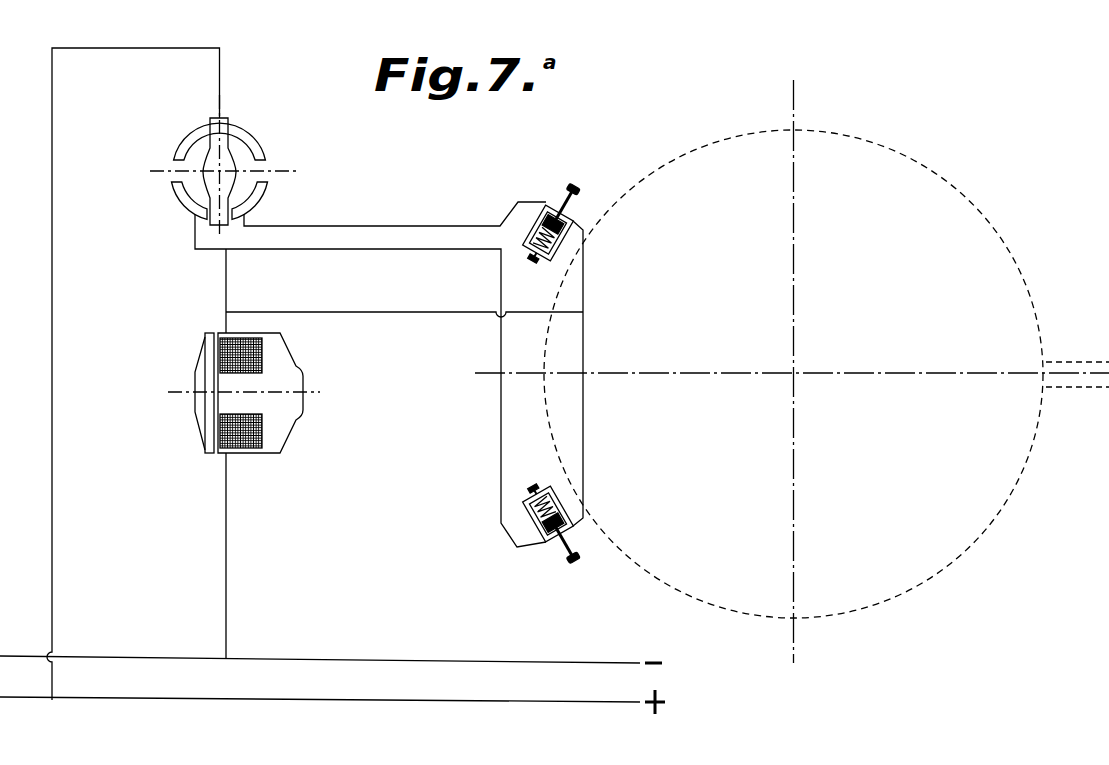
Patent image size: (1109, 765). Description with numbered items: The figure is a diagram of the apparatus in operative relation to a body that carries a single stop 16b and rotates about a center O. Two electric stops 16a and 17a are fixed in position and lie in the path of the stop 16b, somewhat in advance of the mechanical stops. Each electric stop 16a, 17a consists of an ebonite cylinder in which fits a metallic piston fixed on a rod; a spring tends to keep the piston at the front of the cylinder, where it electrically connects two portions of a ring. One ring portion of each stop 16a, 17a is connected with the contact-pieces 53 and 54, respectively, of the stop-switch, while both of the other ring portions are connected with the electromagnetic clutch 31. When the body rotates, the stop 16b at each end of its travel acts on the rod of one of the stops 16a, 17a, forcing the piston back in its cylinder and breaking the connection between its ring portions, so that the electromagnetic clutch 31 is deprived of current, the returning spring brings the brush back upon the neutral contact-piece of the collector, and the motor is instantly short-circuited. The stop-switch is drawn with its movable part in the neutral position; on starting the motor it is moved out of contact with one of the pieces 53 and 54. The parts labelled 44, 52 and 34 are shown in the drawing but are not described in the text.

The shaft bearing 44 is at (225, 165).
The upper brush segment 52 is at (247, 138).
The contact-piece 53 is at (185, 199).
The contact-piece 54 is at (258, 194).
The electromagnetic clutch 31 is at (244, 393).
The armature 34 is at (202, 400).
The electric stop 17a is at (575, 245).
The electric stop 16a is at (572, 497).
The stop 16b is at (1082, 385).
The center o is at (794, 372).